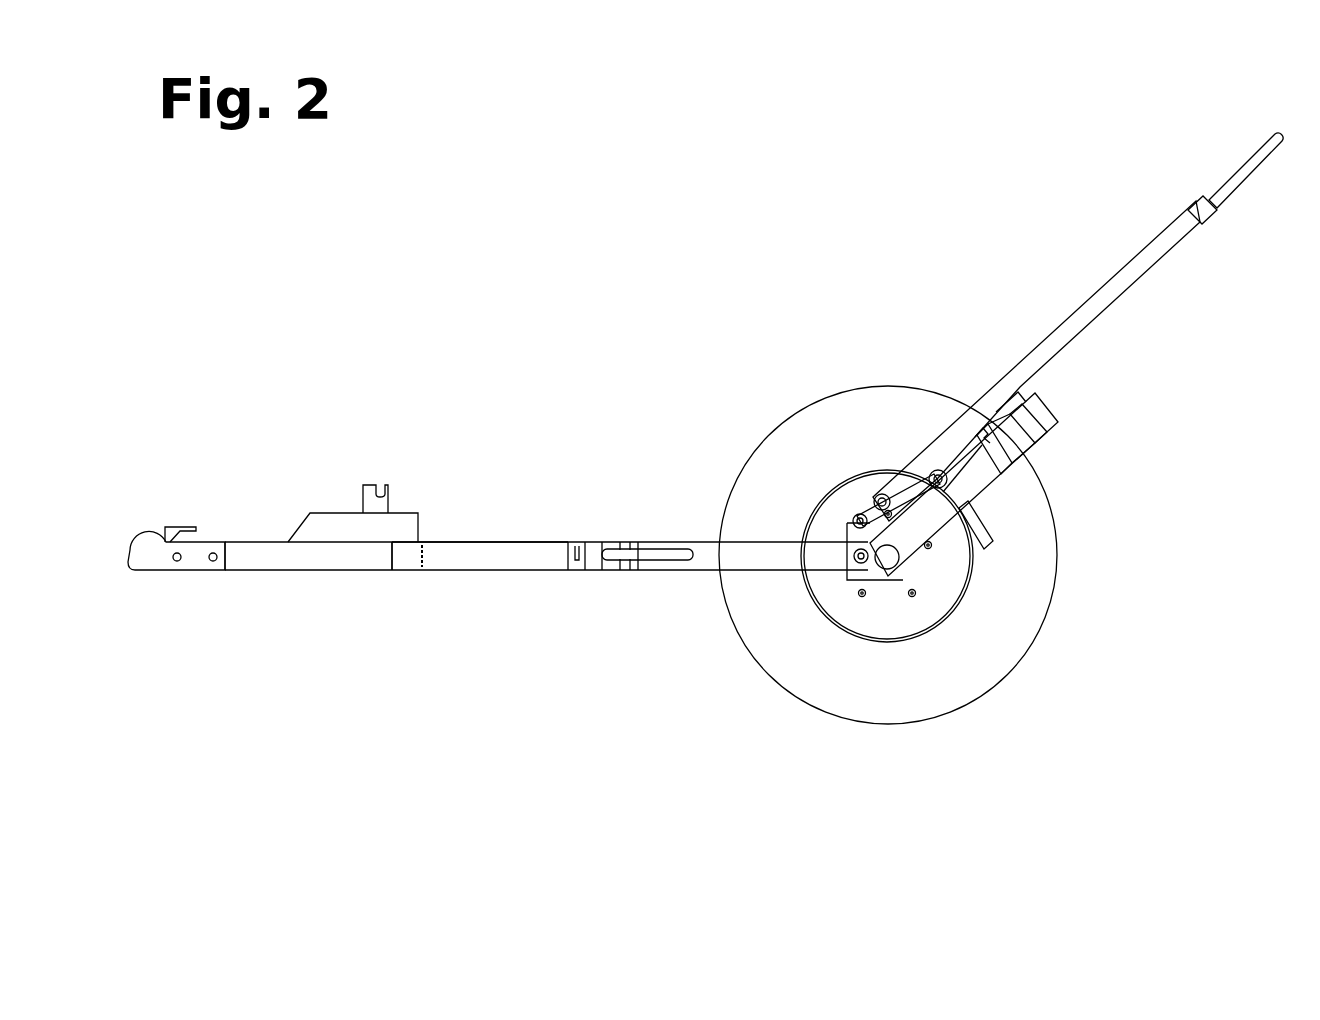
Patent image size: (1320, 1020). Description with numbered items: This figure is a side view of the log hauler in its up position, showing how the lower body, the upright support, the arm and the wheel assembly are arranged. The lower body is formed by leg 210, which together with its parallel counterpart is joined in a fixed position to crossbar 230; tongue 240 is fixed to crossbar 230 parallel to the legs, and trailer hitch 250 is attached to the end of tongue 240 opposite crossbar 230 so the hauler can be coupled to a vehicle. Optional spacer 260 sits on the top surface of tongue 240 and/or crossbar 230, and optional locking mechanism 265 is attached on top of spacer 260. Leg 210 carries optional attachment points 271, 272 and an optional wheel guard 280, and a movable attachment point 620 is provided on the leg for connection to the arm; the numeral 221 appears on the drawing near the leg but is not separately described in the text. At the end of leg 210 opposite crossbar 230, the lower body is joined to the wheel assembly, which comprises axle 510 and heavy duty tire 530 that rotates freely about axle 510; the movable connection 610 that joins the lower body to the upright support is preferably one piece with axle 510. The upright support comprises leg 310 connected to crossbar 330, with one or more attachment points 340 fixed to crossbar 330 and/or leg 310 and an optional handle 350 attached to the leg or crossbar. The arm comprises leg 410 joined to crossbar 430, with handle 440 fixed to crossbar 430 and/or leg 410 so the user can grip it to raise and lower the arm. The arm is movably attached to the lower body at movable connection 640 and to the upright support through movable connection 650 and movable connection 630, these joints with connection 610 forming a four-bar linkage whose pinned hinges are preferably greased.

The leg 210 is at (495, 563).
The beam segment 221 is at (466, 537).
The crossbar 230 is at (401, 561).
The tongue 240 is at (247, 561).
The trailer hitch 250 is at (150, 563).
The spacer 260 is at (307, 534).
The locking mechanism 265 is at (374, 497).
The attachment point 271 is at (634, 572).
The attachment point 272 is at (574, 572).
The wheel guard 280 is at (674, 562).
The leg 310 is at (960, 492).
The crossbar 330 is at (1048, 434).
The attachment point 340 is at (1042, 421).
The handle 350 is at (990, 530).
The leg 410 is at (1032, 353).
The crossbar 430 is at (1199, 208).
The handle 440 is at (1234, 172).
The axle 510 is at (975, 650).
The tire 530 is at (893, 683).
The movable connection 610 is at (887, 565).
The movable attachment point 620 is at (855, 558).
The movable connection 630 is at (935, 476).
The movable connection 640 is at (855, 521).
The movable connection 650 is at (878, 499).